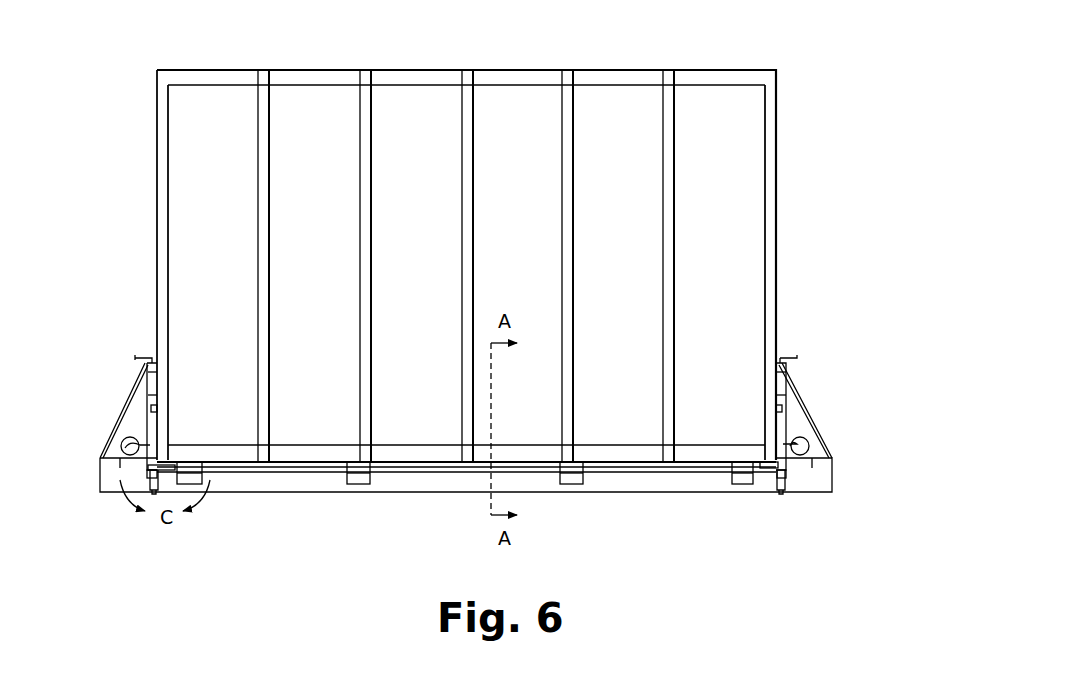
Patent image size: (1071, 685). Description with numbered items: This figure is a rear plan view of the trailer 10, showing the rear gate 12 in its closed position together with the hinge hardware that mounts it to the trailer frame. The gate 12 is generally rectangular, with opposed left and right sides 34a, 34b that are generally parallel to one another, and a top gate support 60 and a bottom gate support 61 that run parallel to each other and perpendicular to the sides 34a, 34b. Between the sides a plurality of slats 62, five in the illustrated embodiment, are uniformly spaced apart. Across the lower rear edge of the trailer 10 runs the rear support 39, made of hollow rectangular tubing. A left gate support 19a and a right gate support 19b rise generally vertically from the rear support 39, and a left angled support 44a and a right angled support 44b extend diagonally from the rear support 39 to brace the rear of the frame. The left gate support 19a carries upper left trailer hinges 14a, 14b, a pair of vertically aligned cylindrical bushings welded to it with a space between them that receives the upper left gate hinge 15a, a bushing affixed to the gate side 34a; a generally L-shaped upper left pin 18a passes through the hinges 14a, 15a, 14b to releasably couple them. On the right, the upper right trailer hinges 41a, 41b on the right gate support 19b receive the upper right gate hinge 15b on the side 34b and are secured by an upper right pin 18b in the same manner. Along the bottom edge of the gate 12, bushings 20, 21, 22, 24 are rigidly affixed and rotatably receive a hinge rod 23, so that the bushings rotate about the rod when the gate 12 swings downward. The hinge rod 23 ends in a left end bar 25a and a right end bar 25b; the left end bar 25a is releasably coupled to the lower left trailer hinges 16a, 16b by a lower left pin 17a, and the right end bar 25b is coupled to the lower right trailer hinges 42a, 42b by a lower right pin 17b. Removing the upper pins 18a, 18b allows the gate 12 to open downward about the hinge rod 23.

The trailer 10 is at (790, 40).
The gate 12 is at (770, 230).
The top gate support 60 is at (297, 72).
The bottom gate support 61 is at (283, 447).
The slats 62 is at (267, 156).
The left side of the gate 34a is at (156, 234).
The right side of the gate 34b is at (778, 136).
The upper left pin 18a is at (148, 356).
The upper right pin 18b is at (790, 356).
The upper left trailer hinge 14a is at (158, 372).
The upper left trailer hinge 14b is at (158, 396).
The left angled support 44a is at (145, 380).
The right angled support 44b is at (800, 400).
The upper left gate hinge 15a is at (128, 400).
The upper right gate hinge 15b is at (795, 392).
The left gate support 19a is at (148, 420).
The right gate support 19b is at (778, 435).
The lower left pin 17a is at (122, 439).
The lower right pin 17b is at (808, 440).
The lower left trailer hinge 16a is at (205, 456).
The lower left trailer hinge 16b is at (148, 473).
The rear support 39 is at (100, 489).
The left end bar 25a is at (156, 488).
The right end bar 25b is at (782, 488).
The bushing 20 is at (190, 484).
The bushing 21 is at (368, 467).
The bushing 22 is at (578, 468).
The hinge rod 23 is at (300, 465).
The bushing 24 is at (740, 467).
The upper right trailer hinge 41a is at (778, 370).
The upper right trailer hinge 41b is at (778, 394).
The lower right trailer hinge 42a is at (780, 462).
The lower right trailer hinge 42b is at (785, 485).